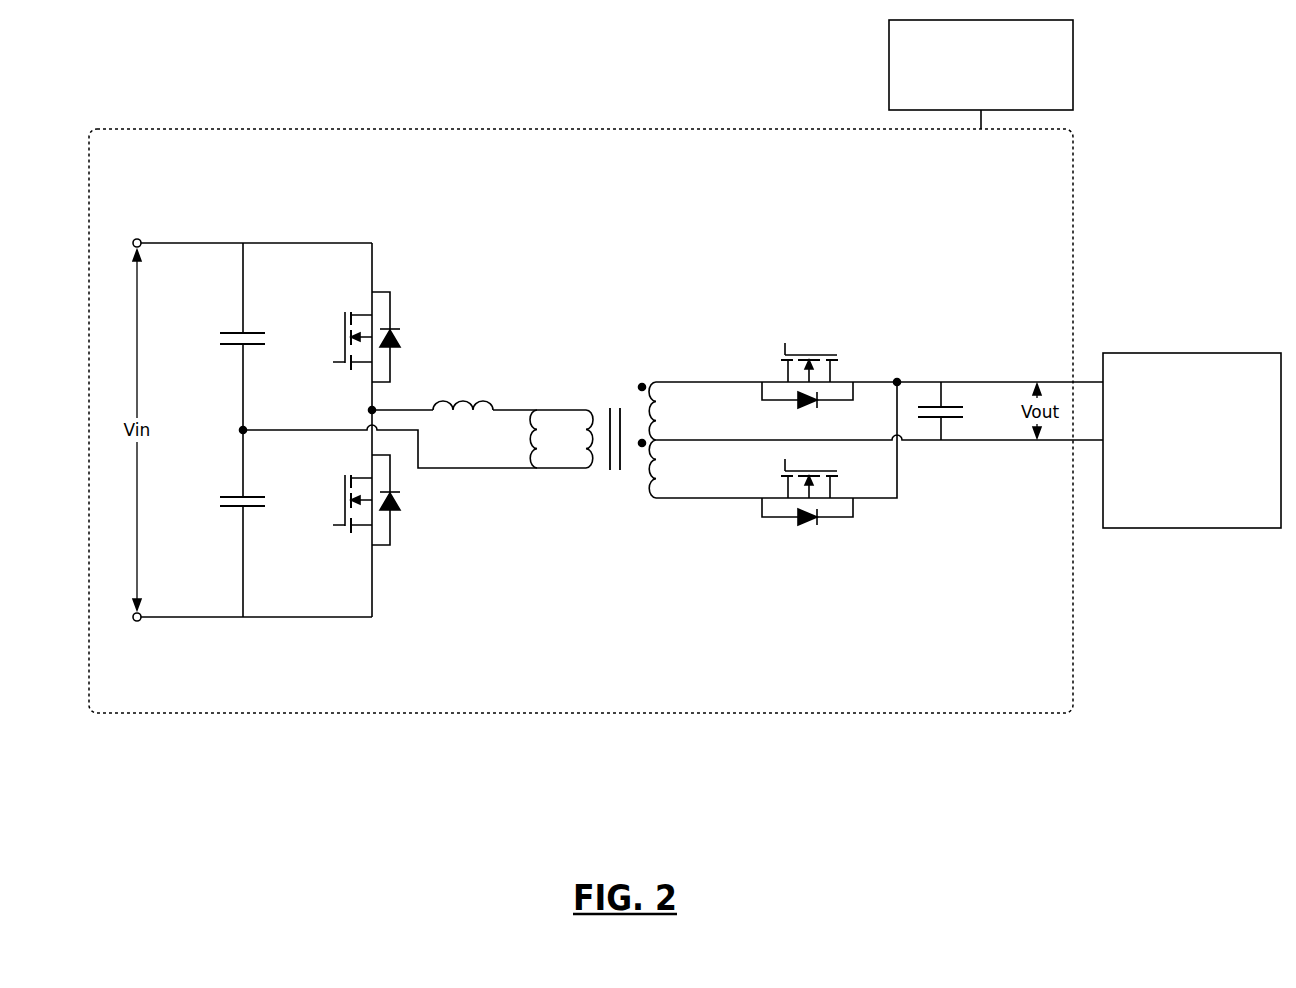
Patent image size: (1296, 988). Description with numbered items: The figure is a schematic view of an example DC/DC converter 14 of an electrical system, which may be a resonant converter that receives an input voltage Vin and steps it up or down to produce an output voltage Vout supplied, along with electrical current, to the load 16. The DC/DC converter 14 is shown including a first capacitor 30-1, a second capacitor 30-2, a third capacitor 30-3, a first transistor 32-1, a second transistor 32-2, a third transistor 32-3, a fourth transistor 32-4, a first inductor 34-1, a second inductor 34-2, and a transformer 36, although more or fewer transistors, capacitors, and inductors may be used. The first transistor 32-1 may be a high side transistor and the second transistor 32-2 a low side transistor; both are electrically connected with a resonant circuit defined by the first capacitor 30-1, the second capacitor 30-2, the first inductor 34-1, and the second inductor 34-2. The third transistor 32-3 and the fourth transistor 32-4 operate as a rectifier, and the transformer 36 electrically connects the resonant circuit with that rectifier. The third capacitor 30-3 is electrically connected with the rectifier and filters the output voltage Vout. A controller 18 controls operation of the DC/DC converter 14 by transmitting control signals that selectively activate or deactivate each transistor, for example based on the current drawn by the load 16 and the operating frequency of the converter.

The DC/DC converter 14 is at (581, 421).
The load 16 is at (1192, 440).
The controller 18 is at (981, 74).
The first capacitor 30-1 is at (236, 332).
The second capacitor 30-2 is at (236, 497).
The third capacitor 30-3 is at (945, 407).
The first transistor 32-1 is at (343, 333).
The second transistor 32-2 is at (343, 496).
The third transistor 32-3 is at (813, 357).
The fourth transistor 32-4 is at (843, 498).
The first inductor 34-1 is at (467, 398).
The second inductor 34-2 is at (540, 430).
The transformer 36 is at (611, 496).